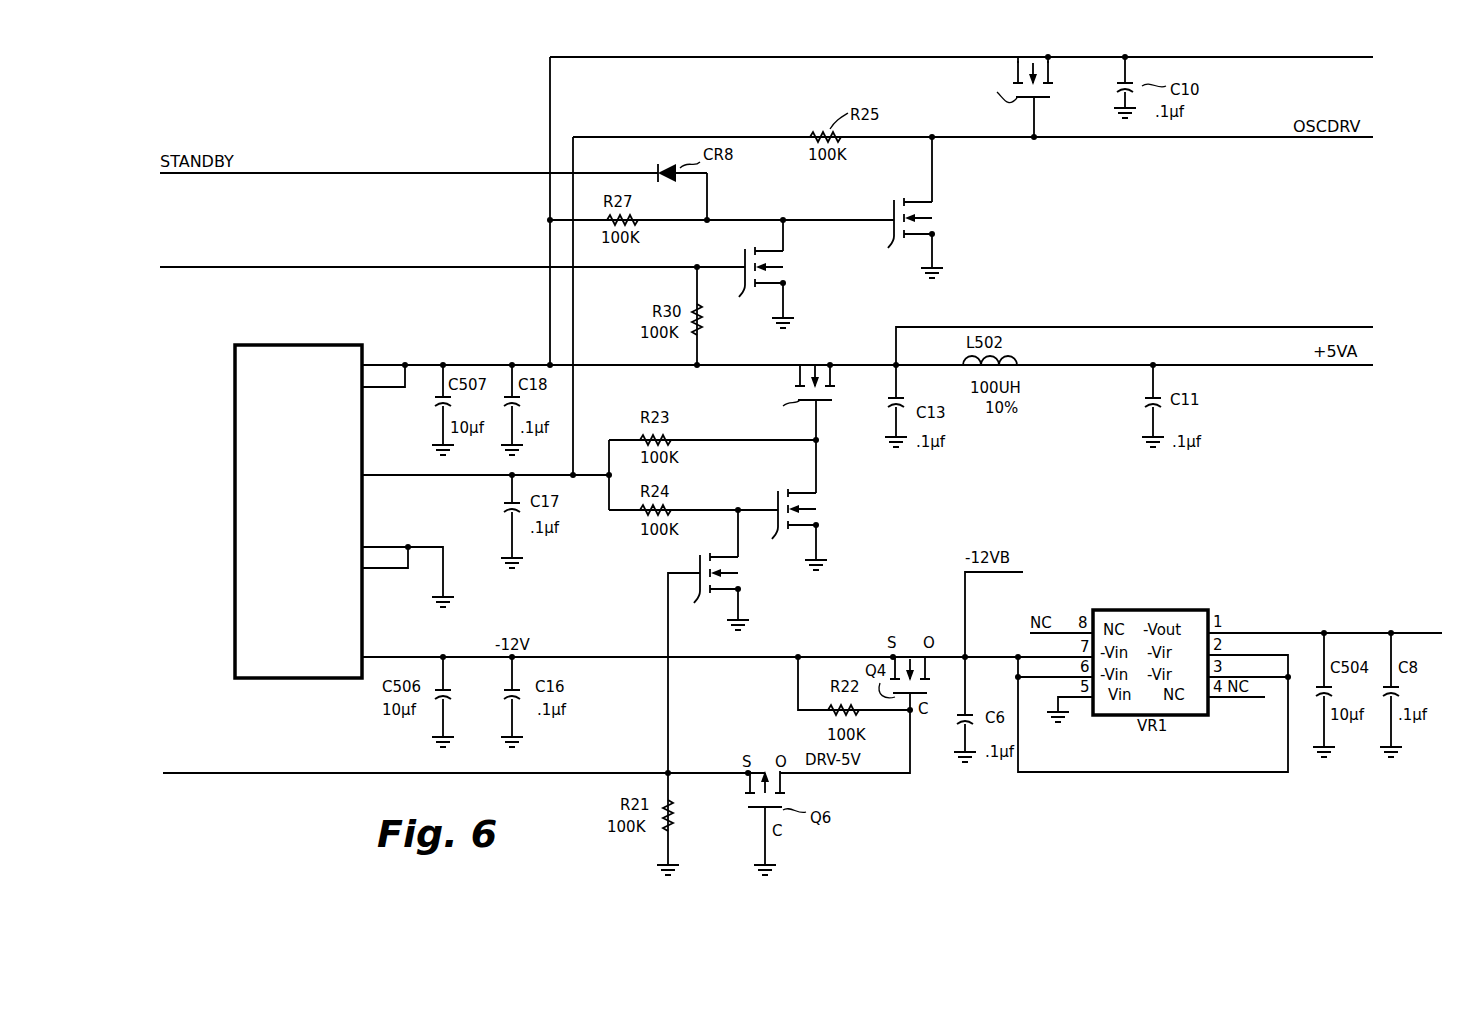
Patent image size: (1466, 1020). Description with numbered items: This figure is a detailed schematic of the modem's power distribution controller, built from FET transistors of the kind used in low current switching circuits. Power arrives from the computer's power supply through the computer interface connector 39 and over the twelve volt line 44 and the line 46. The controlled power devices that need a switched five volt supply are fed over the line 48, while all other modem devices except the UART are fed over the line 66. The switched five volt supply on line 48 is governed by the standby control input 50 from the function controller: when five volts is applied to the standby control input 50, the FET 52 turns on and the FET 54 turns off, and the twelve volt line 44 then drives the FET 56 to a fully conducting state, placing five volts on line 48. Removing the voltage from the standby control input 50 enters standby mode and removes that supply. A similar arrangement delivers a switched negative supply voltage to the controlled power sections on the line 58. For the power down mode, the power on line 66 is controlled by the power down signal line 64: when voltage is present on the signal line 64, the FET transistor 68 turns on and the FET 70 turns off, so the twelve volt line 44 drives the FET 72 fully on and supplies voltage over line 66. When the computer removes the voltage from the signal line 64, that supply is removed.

The computer interface connector 39 is at (235, 642).
The twelve volt line 44 is at (592, 478).
The line 46 is at (618, 363).
The switched five volt power supply line 48 is at (1253, 327).
The standby control input 50 is at (603, 773).
The FET 52 is at (745, 577).
The FET 54 is at (820, 516).
The FET 56 is at (799, 367).
The line 58 is at (1428, 637).
The power down signal line 64 is at (410, 268).
The line 66 is at (1335, 57).
The FET transistor 68 is at (787, 268).
The FET 70 is at (937, 229).
The FET 72 is at (1016, 72).